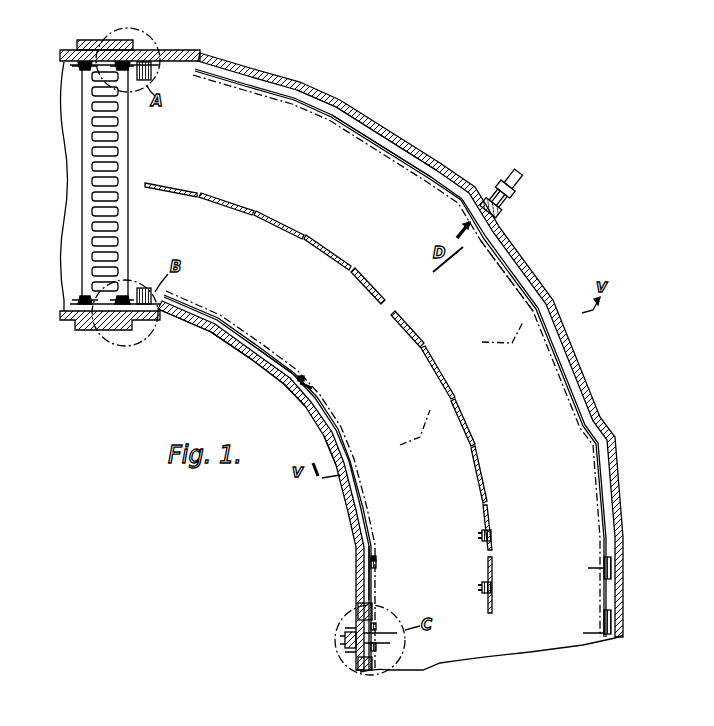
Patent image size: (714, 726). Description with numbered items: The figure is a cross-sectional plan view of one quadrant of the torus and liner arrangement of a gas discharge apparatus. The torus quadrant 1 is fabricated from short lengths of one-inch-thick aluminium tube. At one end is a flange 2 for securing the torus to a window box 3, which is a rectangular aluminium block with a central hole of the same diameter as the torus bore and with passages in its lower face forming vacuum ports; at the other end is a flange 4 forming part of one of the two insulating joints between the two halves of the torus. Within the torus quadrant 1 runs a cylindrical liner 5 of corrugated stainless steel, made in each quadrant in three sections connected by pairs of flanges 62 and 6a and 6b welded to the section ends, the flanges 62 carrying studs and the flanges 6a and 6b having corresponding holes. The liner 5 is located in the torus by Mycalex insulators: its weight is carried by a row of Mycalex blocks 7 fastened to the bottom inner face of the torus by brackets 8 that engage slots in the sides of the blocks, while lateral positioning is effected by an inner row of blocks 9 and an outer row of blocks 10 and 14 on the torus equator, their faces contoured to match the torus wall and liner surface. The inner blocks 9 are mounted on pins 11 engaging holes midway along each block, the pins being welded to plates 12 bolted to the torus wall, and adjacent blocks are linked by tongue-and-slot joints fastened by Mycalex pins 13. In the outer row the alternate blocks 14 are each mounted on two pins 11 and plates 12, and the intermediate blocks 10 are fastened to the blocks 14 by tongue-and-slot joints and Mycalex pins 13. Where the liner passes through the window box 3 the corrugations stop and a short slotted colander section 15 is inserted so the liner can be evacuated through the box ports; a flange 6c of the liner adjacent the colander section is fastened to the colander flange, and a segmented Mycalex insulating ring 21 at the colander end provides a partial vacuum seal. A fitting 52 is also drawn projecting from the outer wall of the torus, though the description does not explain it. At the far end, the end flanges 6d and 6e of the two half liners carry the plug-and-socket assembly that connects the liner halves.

The torus quadrant 1 is at (289, 386).
The flange 2 is at (150, 47).
The window box 3 is at (88, 40).
The flange 4 is at (353, 625).
The cylindrical liner 5 is at (506, 276).
The flange 6a is at (378, 561).
The flange 6b is at (314, 377).
The flange 6c is at (140, 290).
The end flange 6d is at (380, 626).
The end flange 6e is at (378, 648).
The Mycalex blocks 7 is at (487, 500).
The brackets 8 is at (493, 538).
The inner blocks 9 is at (173, 303).
The intermediate blocks 10 is at (375, 143).
The pins 11 is at (347, 123).
The plates 12 is at (343, 101).
The Mycalex pins 13 is at (355, 120).
The alternate blocks 14 is at (200, 76).
The colander section 15 is at (122, 147).
The Mycalex insulating ring 21 is at (128, 58).
The pipe fitting 52 is at (492, 205).
The flanges 62 is at (301, 377).